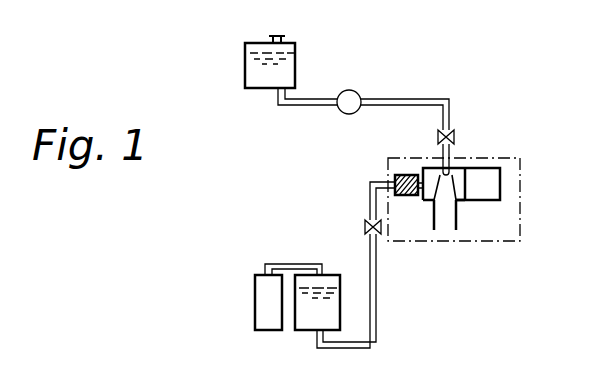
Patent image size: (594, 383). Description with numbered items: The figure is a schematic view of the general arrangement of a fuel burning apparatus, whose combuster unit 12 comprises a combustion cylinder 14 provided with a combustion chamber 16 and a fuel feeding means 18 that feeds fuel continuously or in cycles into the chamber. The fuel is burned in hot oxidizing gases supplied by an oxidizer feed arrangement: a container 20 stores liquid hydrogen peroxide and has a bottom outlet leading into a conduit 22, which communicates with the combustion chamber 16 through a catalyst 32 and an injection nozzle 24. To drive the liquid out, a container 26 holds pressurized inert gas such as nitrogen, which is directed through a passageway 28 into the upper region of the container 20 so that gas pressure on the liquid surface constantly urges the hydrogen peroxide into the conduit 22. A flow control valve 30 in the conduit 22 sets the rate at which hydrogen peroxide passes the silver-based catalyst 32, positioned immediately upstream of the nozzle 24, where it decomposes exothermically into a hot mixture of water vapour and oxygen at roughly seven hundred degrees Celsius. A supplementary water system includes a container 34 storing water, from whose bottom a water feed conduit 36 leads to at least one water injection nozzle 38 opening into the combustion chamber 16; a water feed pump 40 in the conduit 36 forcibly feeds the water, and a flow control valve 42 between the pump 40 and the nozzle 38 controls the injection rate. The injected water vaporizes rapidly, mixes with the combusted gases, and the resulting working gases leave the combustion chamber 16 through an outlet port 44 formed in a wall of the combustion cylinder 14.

The combuster unit 12 is at (511, 246).
The combustion cylinder 14 is at (477, 207).
The combustion chamber 16 is at (436, 206).
The fuel feeding means 18 is at (500, 185).
The hydrogen peroxide container 20 is at (298, 320).
The conduit 22 is at (377, 329).
The injection nozzle 24 is at (442, 165).
The pressurized inert gas container 26 is at (258, 307).
The passageway 28 is at (286, 260).
The flow control valve 30 is at (362, 234).
The catalyst 32 is at (395, 182).
The water container 34 is at (298, 68).
The water feed conduit 36 is at (300, 106).
The water injection nozzle 38 is at (462, 167).
The water feed pump 40 is at (351, 116).
The flow control valve 42 is at (453, 137).
The outlet port 44 is at (442, 204).